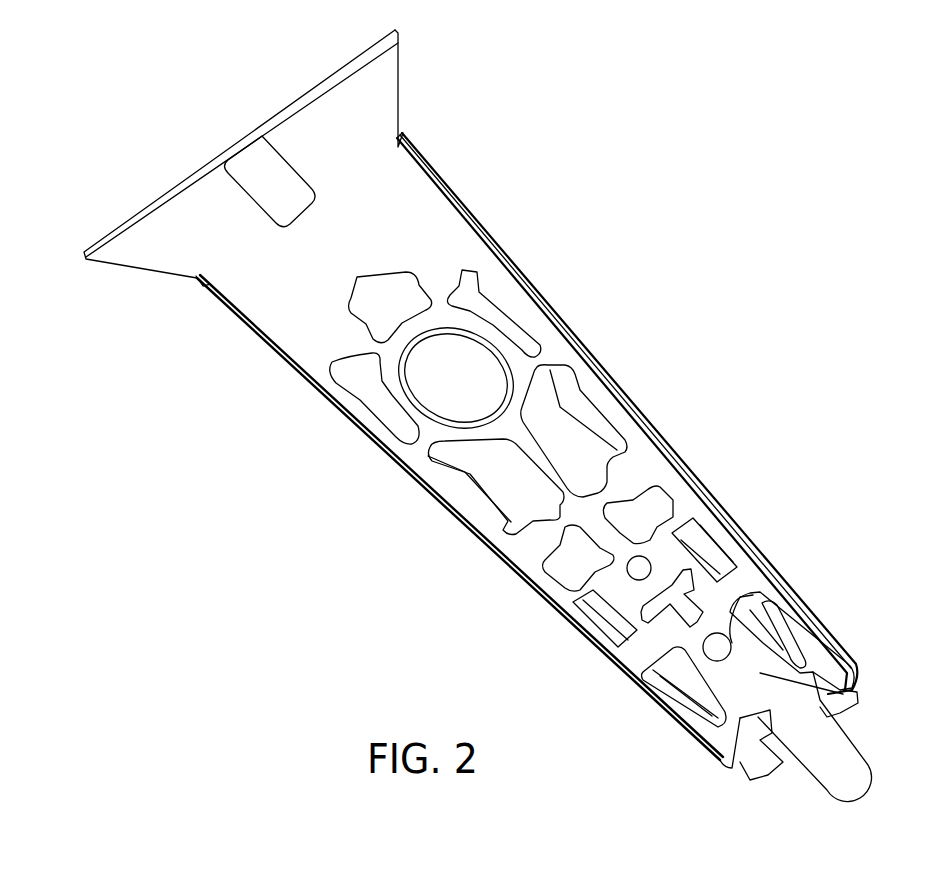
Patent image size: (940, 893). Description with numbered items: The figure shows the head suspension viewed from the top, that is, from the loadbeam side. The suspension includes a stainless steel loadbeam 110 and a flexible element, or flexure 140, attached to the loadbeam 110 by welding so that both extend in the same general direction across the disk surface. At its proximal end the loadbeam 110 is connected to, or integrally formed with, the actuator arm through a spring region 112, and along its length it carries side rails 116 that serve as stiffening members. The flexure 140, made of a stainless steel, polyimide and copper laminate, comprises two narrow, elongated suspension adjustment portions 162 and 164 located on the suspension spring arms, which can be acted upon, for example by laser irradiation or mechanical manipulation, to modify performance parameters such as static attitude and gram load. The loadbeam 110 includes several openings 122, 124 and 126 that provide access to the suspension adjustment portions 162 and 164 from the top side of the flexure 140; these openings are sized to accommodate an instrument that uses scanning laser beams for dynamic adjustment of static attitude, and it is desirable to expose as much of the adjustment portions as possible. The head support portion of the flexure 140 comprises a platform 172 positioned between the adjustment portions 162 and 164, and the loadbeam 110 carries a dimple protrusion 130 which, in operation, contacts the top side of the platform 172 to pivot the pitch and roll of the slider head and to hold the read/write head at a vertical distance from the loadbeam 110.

The loadbeam 110 is at (248, 297).
The spring region 112 is at (367, 117).
The side rails 116 is at (430, 187).
The opening 122 is at (607, 635).
The opening 124 is at (720, 552).
The opening 126 is at (843, 694).
The dimple protrusion 130 is at (720, 647).
The flexure 140 is at (557, 440).
The suspension adjustment portion 162 is at (680, 693).
The suspension adjustment portion 164 is at (791, 583).
The platform 172 is at (767, 613).